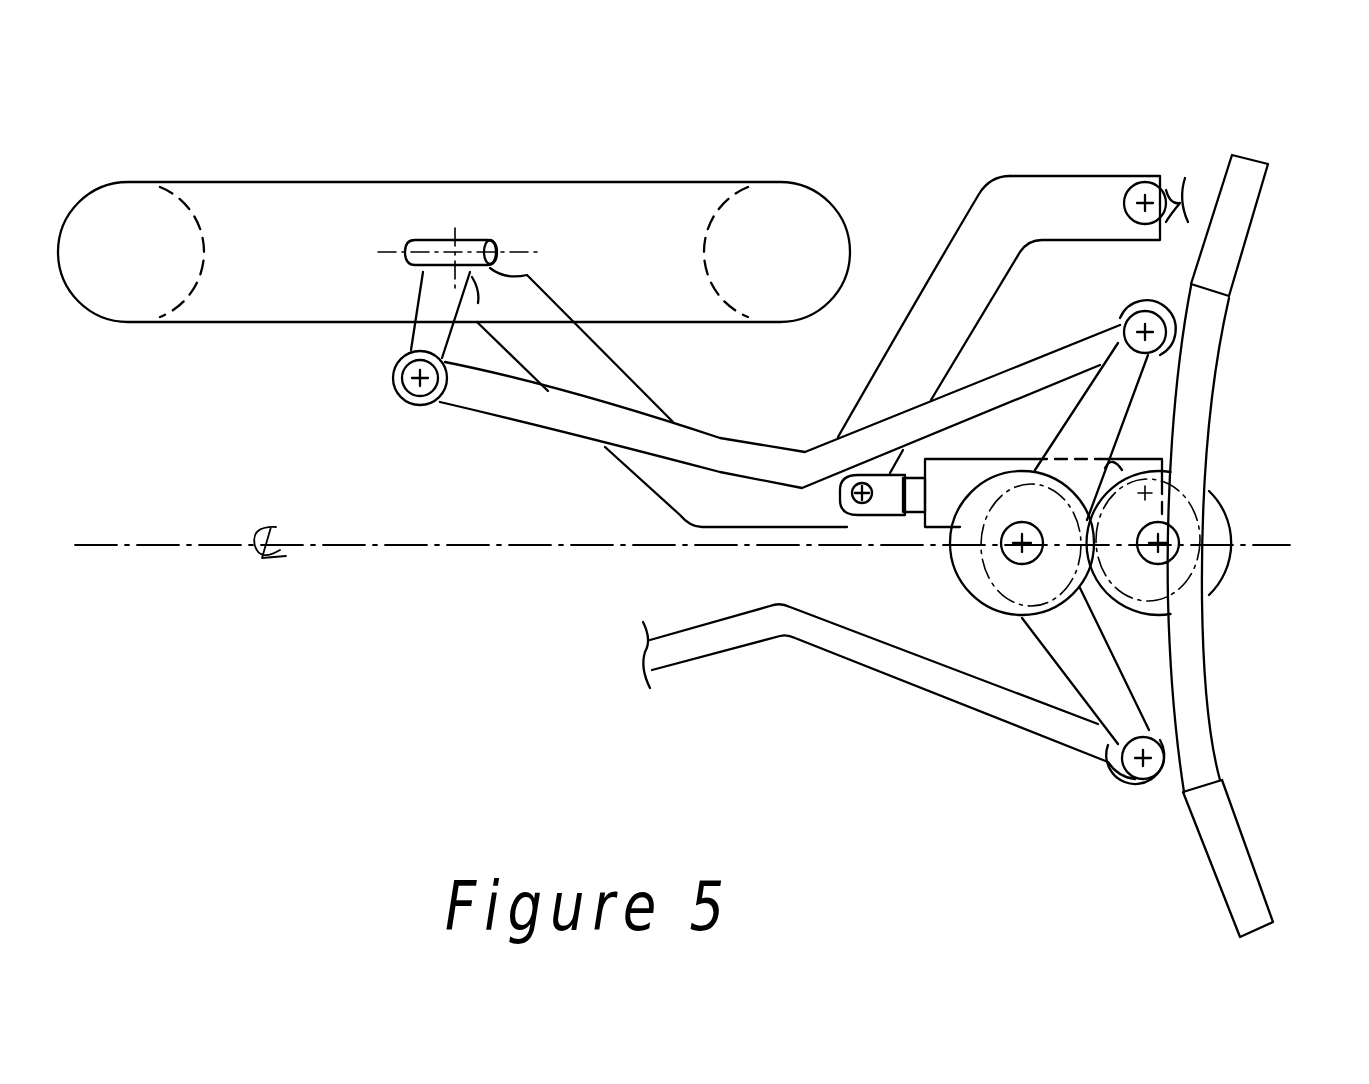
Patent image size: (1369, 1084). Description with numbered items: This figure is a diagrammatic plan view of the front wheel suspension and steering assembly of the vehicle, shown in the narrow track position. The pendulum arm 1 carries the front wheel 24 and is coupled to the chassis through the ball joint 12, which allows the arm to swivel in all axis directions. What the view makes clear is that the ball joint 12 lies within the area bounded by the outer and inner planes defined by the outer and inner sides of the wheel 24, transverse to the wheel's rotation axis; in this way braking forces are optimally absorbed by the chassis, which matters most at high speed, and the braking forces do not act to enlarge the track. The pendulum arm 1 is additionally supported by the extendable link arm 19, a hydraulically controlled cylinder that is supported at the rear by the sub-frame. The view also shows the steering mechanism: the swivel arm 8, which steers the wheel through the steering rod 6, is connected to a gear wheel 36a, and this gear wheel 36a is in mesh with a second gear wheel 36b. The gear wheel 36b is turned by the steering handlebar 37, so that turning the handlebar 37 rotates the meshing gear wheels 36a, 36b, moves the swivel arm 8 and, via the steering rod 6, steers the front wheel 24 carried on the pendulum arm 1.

The pendulum arm 1 is at (1013, 190).
The steering rod 6 is at (492, 397).
The swivel arm 8 is at (1107, 403).
The ball joint 12 is at (1146, 190).
The extendable link arm 19 is at (1115, 470).
The front wheel 24 is at (790, 208).
The gear wheel 36a is at (958, 560).
The gear wheel 36b is at (1215, 568).
The steering handlebar 37 is at (1197, 347).